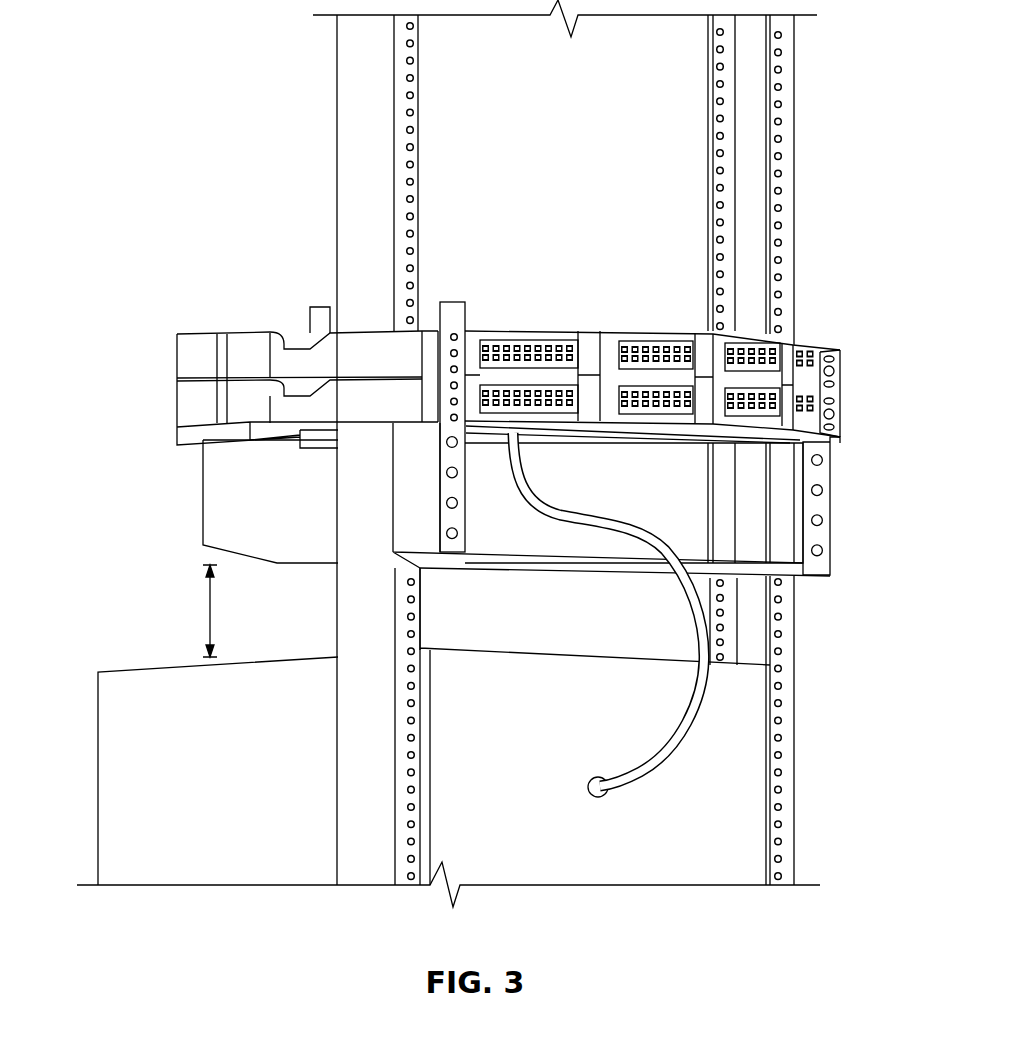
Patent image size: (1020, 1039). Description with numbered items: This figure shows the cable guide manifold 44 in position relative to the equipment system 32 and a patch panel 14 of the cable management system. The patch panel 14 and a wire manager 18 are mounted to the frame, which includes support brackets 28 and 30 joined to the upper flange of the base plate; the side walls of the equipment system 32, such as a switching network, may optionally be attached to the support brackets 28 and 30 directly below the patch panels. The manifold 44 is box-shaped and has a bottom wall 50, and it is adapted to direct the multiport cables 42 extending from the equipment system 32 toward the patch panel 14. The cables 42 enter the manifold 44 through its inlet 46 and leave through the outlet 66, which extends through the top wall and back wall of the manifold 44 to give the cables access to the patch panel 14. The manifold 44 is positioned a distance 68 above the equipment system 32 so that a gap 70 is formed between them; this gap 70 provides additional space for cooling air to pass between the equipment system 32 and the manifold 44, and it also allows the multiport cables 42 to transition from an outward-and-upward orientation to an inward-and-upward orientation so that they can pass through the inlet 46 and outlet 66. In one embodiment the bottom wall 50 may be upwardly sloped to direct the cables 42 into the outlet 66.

The patch panel 14 is at (808, 340).
The wire manager 18 is at (187, 353).
The support bracket 28 is at (788, 219).
The support bracket 30 is at (345, 213).
The equipment system 32 is at (110, 762).
The multiport cable 42 is at (700, 648).
The cable guide manifold 44 is at (848, 534).
The inlet 46 is at (781, 489).
The bottom wall 50 is at (300, 560).
The outlet 66 is at (488, 450).
The distance 68 is at (208, 608).
The gap 70 is at (672, 598).